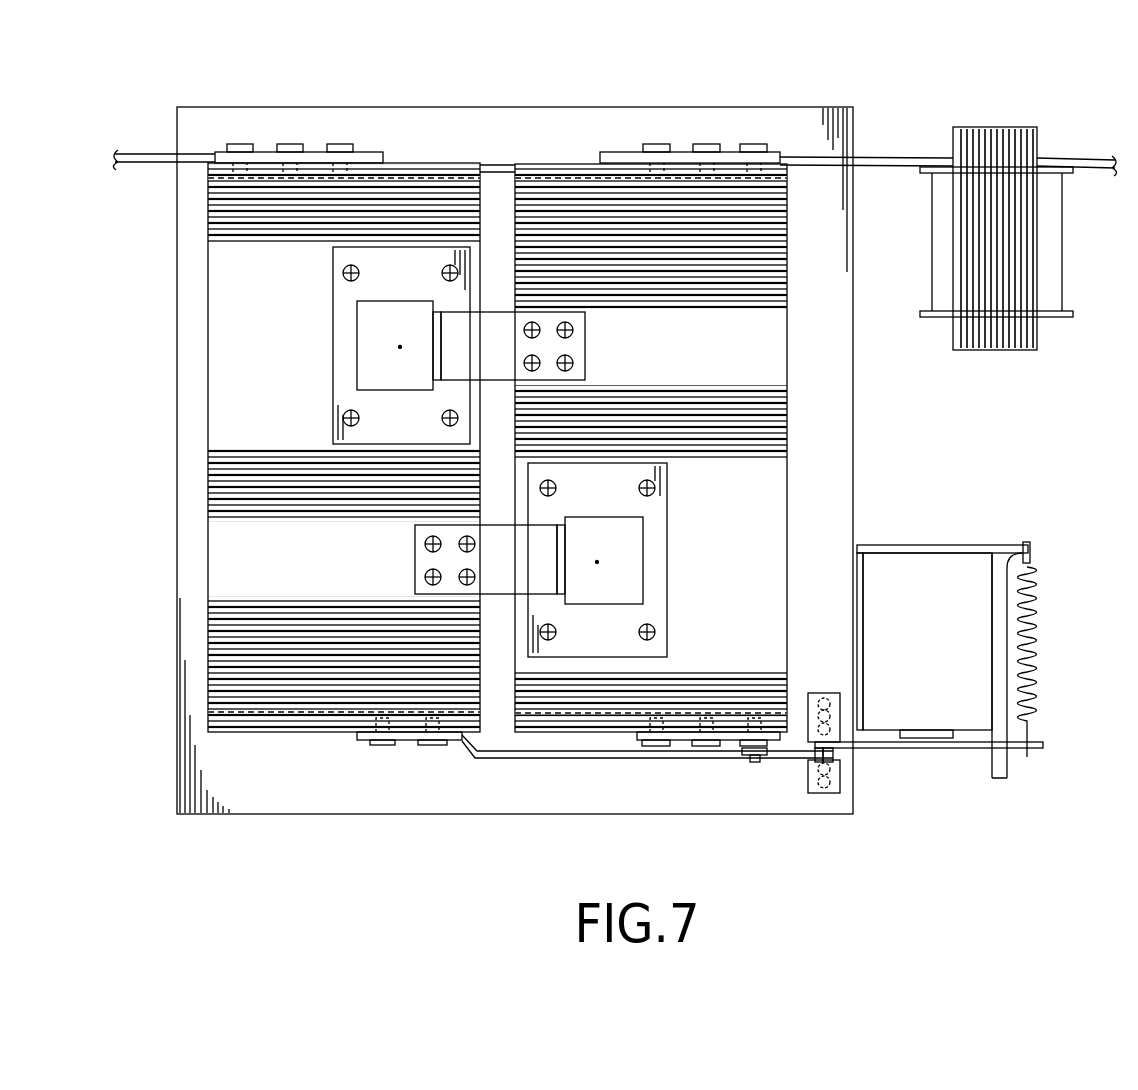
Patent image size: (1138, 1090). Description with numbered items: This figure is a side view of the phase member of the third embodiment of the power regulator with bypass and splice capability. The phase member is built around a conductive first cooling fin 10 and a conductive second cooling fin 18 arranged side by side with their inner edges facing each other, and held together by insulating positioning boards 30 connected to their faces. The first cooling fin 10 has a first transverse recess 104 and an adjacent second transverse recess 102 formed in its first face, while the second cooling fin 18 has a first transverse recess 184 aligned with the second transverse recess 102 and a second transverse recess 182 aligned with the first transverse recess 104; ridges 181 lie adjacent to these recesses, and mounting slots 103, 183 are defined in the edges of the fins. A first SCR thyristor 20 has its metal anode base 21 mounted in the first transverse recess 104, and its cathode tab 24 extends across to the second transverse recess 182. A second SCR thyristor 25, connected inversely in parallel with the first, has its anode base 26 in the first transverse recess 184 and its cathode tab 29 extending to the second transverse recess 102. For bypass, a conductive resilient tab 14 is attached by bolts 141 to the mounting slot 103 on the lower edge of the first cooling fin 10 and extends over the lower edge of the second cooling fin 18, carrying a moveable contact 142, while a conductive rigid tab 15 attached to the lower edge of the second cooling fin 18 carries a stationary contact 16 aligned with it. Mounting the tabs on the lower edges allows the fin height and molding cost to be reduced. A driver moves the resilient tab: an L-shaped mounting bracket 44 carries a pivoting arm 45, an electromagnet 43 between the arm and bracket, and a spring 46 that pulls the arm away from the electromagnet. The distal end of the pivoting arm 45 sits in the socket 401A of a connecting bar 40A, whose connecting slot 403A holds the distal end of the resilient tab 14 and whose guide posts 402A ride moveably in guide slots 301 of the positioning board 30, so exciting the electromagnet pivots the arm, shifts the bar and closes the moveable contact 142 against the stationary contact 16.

The first cooling fin 10 is at (208, 217).
The first transverse recess 104 is at (238, 275).
The second transverse recess 102 is at (228, 557).
The mounting slot 103 is at (308, 712).
The anode base 21 is at (345, 325).
The first SCR thyristor 20 is at (337, 362).
The cathode tab 24 is at (500, 327).
The mounting slots 183 is at (403, 178).
The ridges 181 is at (680, 202).
The second cooling fin 18 is at (787, 402).
The second transverse recess 182 is at (762, 354).
The first transverse recess 184 is at (753, 492).
The positioning board 30 is at (825, 455).
The anode base 26 is at (655, 547).
The second SCR thyristor 25 is at (663, 589).
The cathode tab 29 is at (496, 594).
The bolts 141 is at (433, 745).
The conductive resilient tab 14 is at (663, 757).
The conductive rigid tab 15 is at (728, 737).
The moveable contact 142 is at (753, 762).
The stationary contact 16 is at (793, 762).
The guide slots 301 is at (822, 697).
The guide posts 402A is at (830, 700).
The socket 401A is at (828, 740).
The connecting slot 403A is at (855, 757).
The connecting bar 40A is at (837, 783).
The mounting bracket 44 is at (900, 550).
The electromagnet 43 is at (968, 575).
The pivoting arm 45 is at (977, 747).
The spring 46 is at (1040, 630).